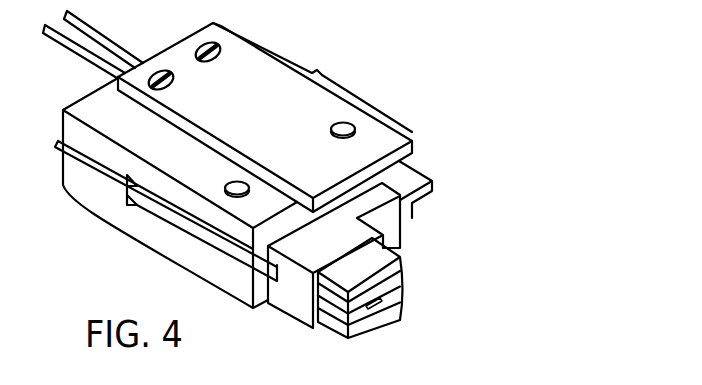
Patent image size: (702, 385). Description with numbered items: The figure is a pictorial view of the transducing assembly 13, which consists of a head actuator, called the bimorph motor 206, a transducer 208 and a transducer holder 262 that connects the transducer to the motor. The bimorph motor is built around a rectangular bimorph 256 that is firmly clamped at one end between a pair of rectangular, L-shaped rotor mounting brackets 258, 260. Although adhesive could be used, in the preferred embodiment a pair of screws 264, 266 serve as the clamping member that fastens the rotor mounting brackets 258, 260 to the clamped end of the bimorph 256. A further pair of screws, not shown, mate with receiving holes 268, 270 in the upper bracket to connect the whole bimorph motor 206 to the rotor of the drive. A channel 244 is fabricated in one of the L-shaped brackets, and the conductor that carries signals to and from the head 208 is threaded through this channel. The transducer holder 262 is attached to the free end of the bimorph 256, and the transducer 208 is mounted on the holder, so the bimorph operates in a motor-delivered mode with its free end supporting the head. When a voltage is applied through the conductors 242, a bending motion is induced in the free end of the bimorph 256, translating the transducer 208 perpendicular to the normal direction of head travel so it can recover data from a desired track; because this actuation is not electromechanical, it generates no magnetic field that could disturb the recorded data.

The transducing assembly 13 is at (390, 96).
The bimorph motor 206 is at (312, 77).
The transducer 208 is at (382, 331).
The conductors 242 is at (112, 30).
The channel 244 is at (117, 85).
The rectangular bimorph 256 is at (423, 178).
The rotor mounting bracket 258 is at (268, 126).
The rotor mounting bracket 260 is at (197, 273).
The transducer holder 262 is at (403, 238).
The screw 264 is at (174, 84).
The screw 266 is at (221, 56).
The receiving hole 268 is at (246, 194).
The receiving hole 270 is at (338, 136).